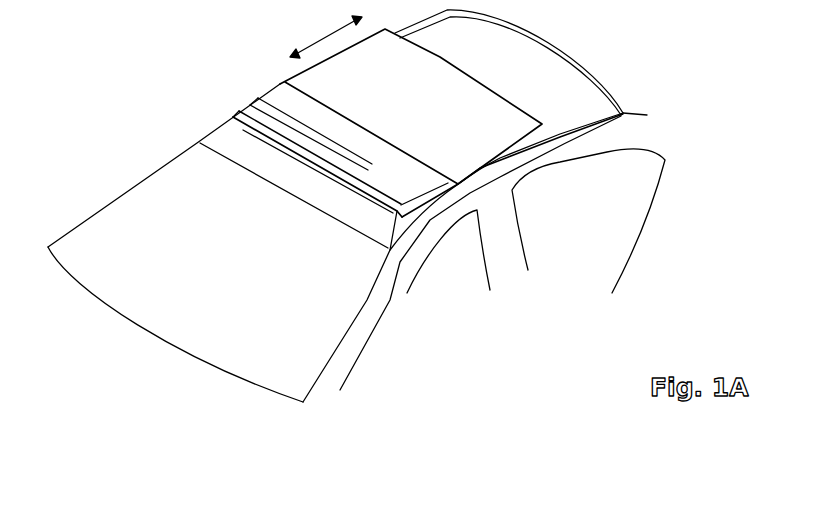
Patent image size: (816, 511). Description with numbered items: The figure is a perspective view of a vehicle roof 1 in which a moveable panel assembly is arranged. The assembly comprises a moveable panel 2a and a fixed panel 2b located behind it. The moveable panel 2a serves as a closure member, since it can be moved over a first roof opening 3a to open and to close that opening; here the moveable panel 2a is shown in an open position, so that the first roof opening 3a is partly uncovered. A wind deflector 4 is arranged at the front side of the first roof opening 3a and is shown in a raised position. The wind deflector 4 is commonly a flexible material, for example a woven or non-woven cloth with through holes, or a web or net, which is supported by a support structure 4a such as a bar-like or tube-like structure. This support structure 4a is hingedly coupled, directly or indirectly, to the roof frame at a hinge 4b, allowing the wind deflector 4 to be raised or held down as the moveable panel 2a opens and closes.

The vehicle roof 1 is at (615, 143).
The moveable panel 2a is at (423, 102).
The fixed panel 2b is at (525, 73).
The first roof opening 3a is at (293, 128).
The wind deflector 4 is at (248, 136).
The support structure 4a is at (380, 218).
The hinge 4b is at (252, 97).